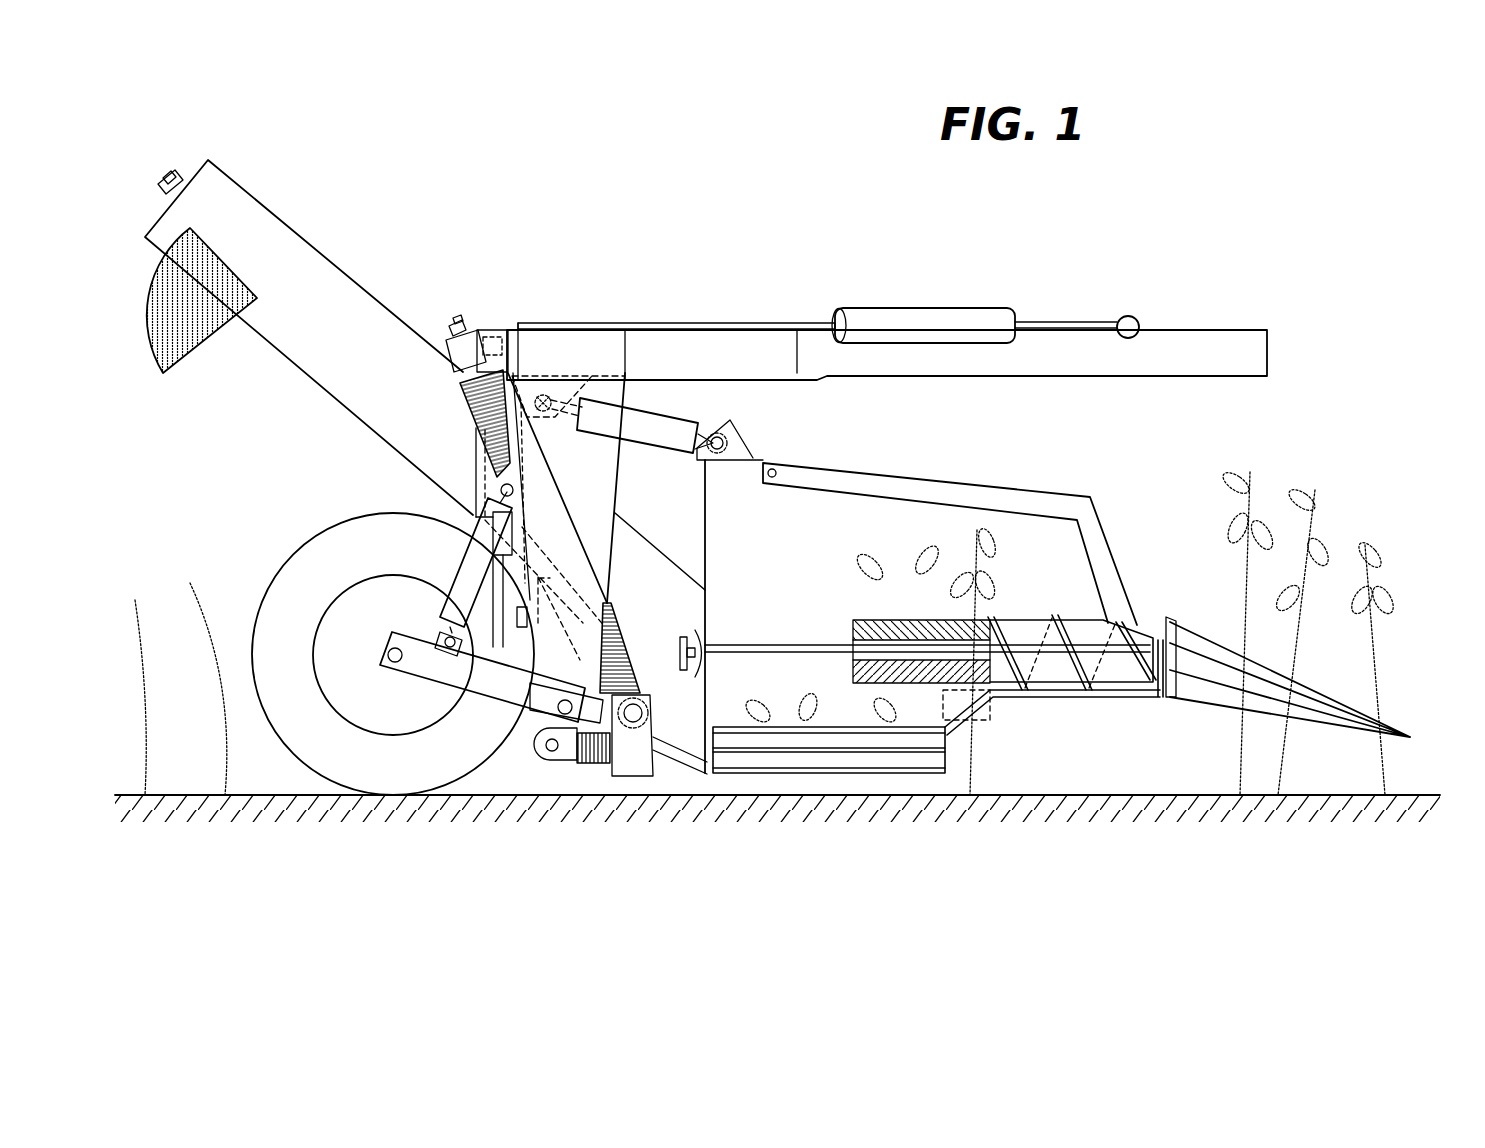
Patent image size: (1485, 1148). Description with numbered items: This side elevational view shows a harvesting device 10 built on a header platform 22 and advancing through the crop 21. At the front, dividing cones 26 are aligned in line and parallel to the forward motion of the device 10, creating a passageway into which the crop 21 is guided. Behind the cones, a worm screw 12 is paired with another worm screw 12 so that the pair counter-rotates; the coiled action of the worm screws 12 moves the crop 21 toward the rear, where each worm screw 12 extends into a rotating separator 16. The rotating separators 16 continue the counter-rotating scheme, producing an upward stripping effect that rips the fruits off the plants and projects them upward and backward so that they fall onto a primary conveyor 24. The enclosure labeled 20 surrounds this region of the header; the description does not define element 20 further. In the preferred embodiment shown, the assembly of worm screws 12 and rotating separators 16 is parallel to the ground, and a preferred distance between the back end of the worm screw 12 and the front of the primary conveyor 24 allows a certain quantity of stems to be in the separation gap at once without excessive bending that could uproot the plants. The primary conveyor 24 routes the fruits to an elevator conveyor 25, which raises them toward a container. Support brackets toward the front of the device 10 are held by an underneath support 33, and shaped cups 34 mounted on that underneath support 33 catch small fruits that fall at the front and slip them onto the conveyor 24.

The device 10 is at (1062, 213).
The worm screw 12 is at (1110, 675).
The rotating separator 16 is at (906, 620).
The housing 20 is at (772, 706).
The crop 21 is at (1320, 527).
The header platform 22 is at (700, 690).
The primary conveyor 24 is at (772, 748).
The elevator conveyor 25 is at (317, 288).
The dividing cone 26 is at (1333, 700).
The underneath support 33 is at (1050, 697).
The shaped cup 34 is at (977, 700).